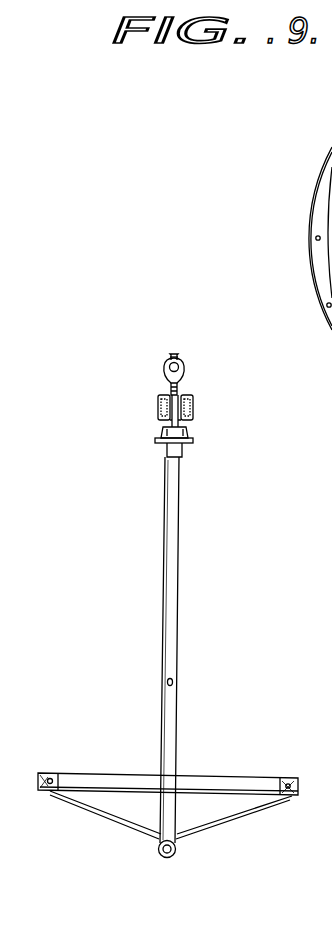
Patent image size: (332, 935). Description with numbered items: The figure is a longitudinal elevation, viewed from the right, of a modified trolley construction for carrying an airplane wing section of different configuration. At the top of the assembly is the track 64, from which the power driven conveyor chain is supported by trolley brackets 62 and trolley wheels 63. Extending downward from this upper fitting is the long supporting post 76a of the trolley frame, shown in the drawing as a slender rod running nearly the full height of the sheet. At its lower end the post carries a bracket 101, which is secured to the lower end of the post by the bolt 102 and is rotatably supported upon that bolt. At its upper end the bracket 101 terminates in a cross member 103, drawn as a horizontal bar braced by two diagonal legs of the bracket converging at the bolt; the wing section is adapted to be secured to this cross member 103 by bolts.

The trolley bracket 62 is at (188, 402).
The trolley wheel 63 is at (166, 367).
The track 64 is at (178, 357).
The shaft 76a is at (177, 605).
The bracket 101 is at (225, 813).
The bolt 102 is at (175, 855).
The cross member 103 is at (210, 784).